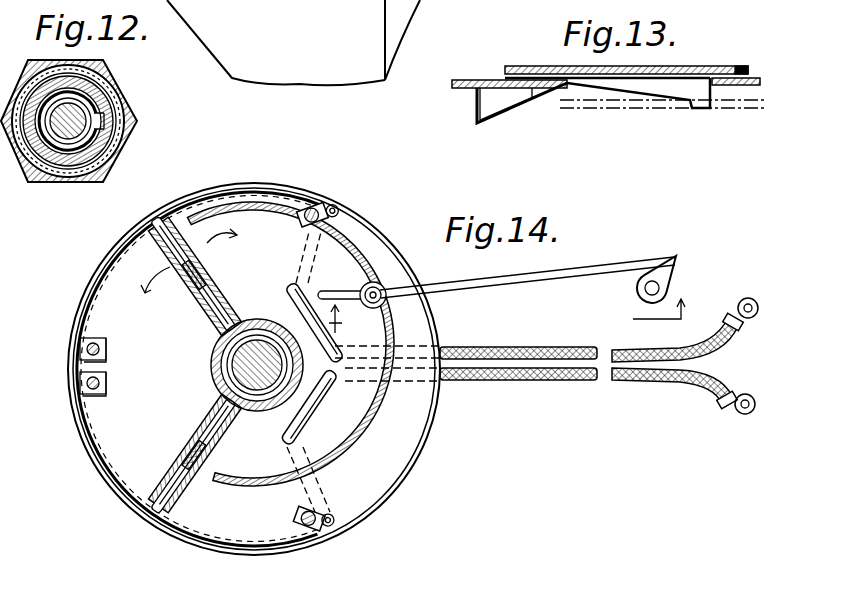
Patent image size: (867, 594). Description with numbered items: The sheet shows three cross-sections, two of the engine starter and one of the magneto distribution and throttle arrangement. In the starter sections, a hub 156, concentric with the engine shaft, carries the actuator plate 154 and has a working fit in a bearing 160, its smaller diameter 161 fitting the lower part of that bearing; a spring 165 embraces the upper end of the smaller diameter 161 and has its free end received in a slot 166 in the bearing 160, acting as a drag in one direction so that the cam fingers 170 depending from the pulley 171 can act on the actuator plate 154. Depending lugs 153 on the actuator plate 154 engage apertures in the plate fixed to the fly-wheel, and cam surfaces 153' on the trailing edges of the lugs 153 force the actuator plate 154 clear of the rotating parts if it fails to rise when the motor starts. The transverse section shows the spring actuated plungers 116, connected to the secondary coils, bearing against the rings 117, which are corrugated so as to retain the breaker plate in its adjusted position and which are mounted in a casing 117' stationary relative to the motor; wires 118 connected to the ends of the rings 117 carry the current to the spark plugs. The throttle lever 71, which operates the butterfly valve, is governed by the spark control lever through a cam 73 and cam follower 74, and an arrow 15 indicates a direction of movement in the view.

In FIG. 12, the hub 156 is at (72, 175).
In FIG. 12, the bearing 160 is at (100, 90).
In FIG. 12, the smaller diameter 161 is at (103, 107).
In FIG. 12, the slot 166 is at (90, 112).
In FIG. 12, the spring 165 is at (112, 130).
In FIG. 13, the depending lugs 153 is at (490, 111).
In FIG. 13, the actuator plate 154 is at (510, 121).
In FIG. 13, the cam surfaces 153' is at (626, 115).
In FIG. 13, the cam fingers 170 is at (668, 85).
In FIG. 13, the pulley 171 is at (703, 64).
In FIG. 14, the rings 117 is at (254, 348).
In FIG. 14, the casing 117' is at (269, 369).
In FIG. 14, the spring actuated plungers 116 is at (207, 252).
In FIG. 14, the cam 73 is at (355, 246).
In FIG. 14, the cam follower 74 is at (366, 285).
In FIG. 14, the direction arrow 15 is at (525, 315).
In FIG. 14, the throttle lever 71 is at (522, 268).
In FIG. 14, the wires 118 is at (560, 327).